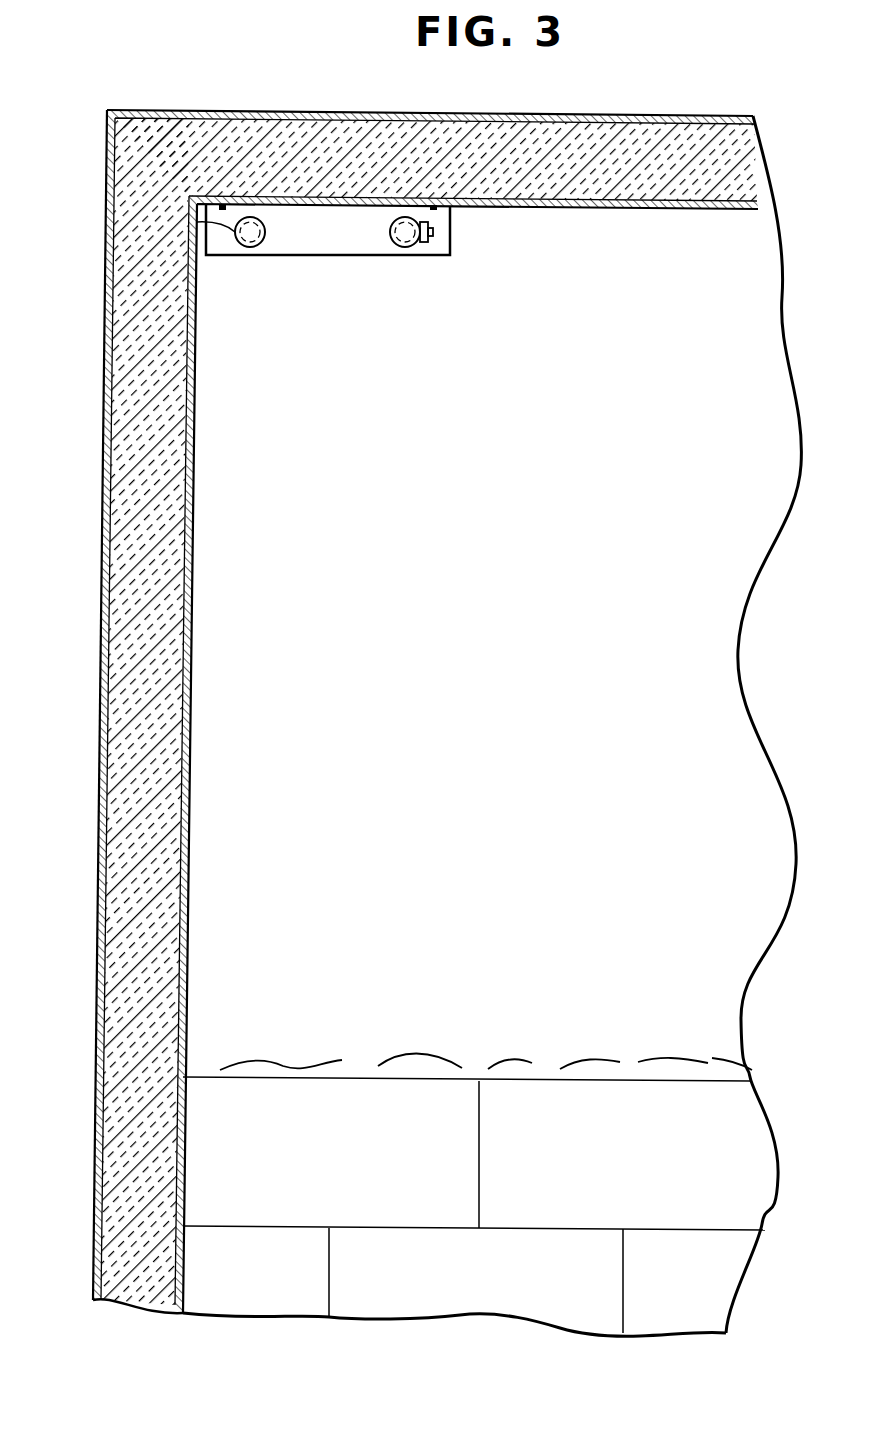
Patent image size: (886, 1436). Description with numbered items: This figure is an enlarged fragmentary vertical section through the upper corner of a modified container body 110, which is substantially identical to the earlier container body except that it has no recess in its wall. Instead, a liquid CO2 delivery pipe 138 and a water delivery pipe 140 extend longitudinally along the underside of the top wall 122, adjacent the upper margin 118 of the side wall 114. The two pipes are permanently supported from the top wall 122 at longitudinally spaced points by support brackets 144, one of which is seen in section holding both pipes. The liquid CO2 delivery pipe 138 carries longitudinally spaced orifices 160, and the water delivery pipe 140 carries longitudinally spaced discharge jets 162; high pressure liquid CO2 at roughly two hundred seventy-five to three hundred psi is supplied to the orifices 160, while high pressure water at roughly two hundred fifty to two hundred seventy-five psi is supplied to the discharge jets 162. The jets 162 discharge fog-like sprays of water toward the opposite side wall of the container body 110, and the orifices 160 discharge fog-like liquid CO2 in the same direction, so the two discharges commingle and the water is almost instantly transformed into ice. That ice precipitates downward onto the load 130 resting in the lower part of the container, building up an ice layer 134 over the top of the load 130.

The container body 110 is at (598, 114).
The side wall 114 is at (106, 396).
The upper margin 118 is at (107, 172).
The top wall 122 is at (188, 109).
The load 130 is at (750, 1125).
The ice layer 134 is at (416, 1070).
The liquid CO2 delivery pipe 138 is at (197, 222).
The water delivery pipe 140 is at (393, 224).
The support bracket 144 is at (337, 235).
The orifice 160 is at (261, 221).
The discharge jet 162 is at (430, 226).